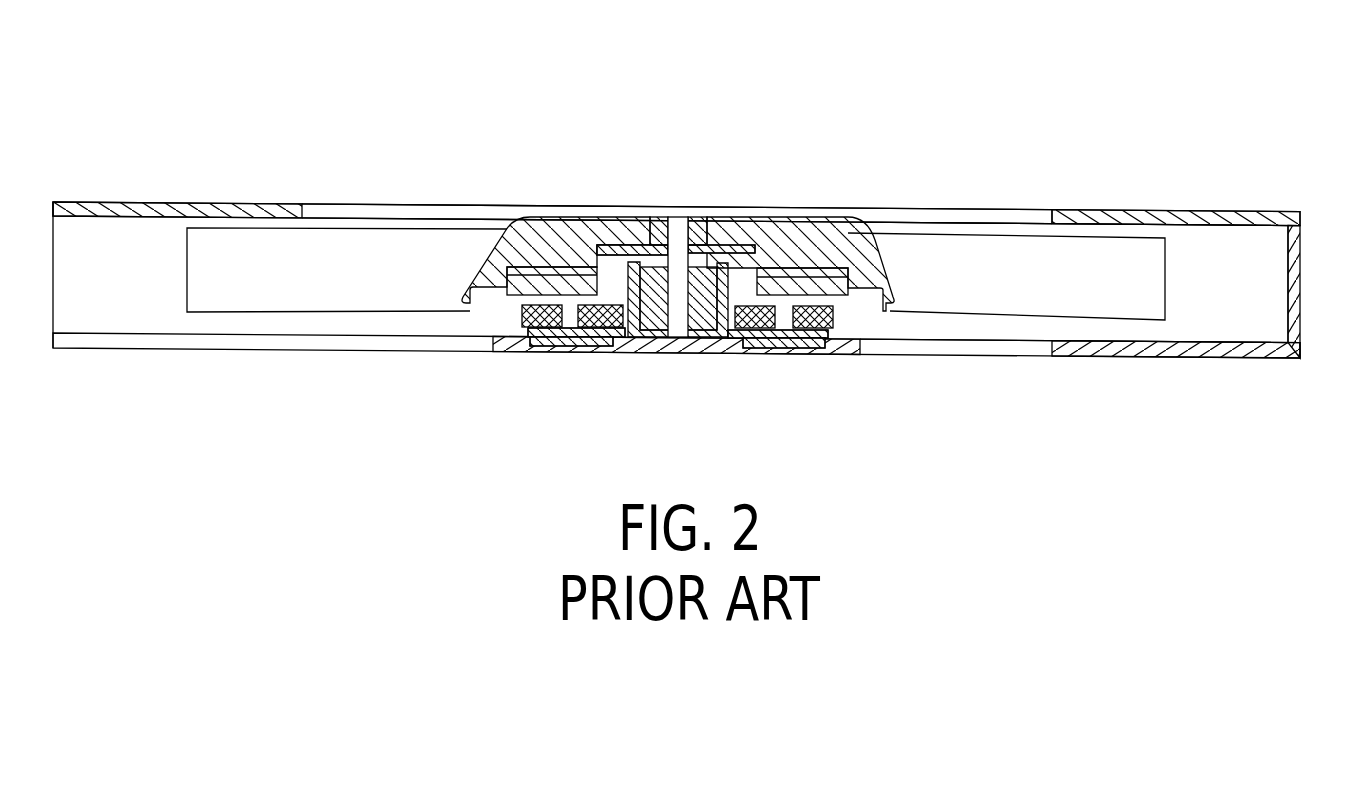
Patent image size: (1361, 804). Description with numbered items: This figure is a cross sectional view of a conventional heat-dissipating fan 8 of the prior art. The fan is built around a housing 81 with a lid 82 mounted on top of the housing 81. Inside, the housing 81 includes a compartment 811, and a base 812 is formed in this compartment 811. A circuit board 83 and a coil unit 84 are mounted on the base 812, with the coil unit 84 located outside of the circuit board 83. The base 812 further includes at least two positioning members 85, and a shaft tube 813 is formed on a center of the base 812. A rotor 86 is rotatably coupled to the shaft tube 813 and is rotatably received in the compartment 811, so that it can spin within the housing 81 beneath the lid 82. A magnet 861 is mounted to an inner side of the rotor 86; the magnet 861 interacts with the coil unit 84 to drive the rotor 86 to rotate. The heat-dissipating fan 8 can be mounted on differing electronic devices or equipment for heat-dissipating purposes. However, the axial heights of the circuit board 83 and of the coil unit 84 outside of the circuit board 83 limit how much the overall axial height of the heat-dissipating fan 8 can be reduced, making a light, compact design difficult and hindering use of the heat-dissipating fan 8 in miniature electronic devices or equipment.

The heat-dissipating fan 8 is at (702, 261).
The housing 81 is at (1295, 277).
The compartment 811 is at (1218, 283).
The base 812 is at (843, 342).
The shaft tube 813 is at (727, 283).
The lid 82 is at (140, 202).
The circuit board 83 is at (525, 332).
The coil unit 84 is at (522, 313).
The positioning members 85 is at (560, 345).
The rotor 86 is at (790, 238).
The magnet 861 is at (540, 283).